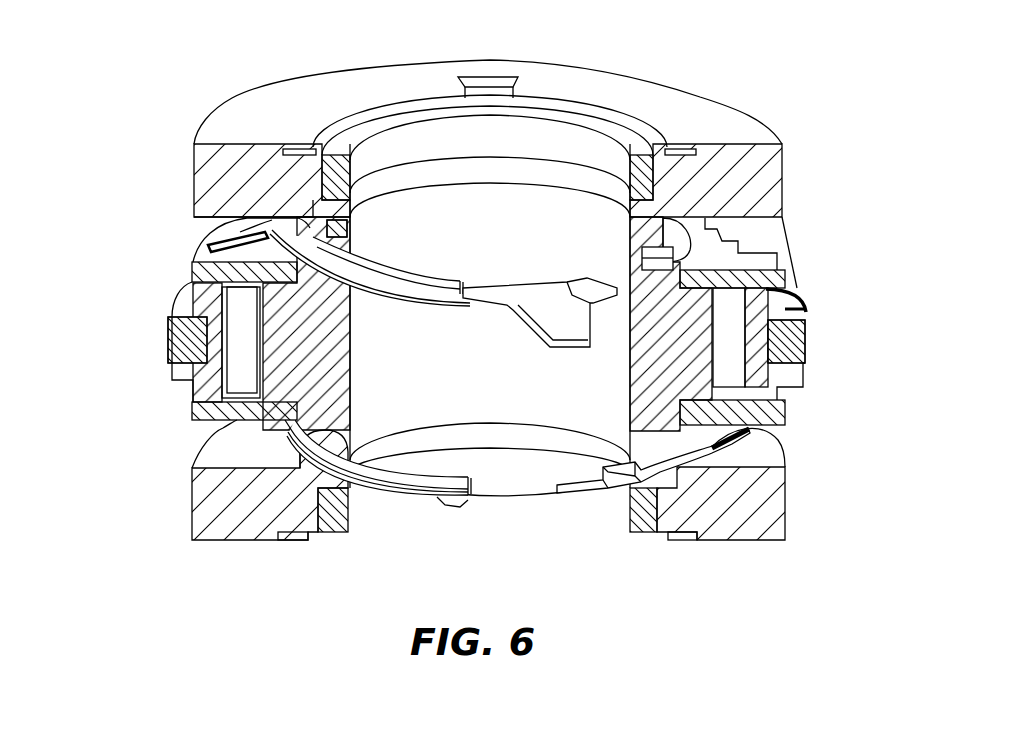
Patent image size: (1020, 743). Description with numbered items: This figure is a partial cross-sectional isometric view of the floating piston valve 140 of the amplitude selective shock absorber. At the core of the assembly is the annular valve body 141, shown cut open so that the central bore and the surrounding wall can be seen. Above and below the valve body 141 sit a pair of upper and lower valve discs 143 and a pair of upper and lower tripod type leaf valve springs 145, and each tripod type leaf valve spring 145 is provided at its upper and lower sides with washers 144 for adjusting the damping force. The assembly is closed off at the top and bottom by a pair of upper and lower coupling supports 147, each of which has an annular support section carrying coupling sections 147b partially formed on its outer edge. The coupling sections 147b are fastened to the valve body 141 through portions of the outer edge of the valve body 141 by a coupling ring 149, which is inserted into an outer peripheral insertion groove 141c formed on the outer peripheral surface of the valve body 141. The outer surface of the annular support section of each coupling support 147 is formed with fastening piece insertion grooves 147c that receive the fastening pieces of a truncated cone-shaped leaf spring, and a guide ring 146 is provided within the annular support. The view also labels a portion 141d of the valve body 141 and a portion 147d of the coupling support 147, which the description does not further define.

The floating piston valve 140 is at (470, 305).
The annular valve body 141 is at (178, 305).
The outer peripheral insertion groove 141c is at (172, 375).
The housing groove 141d is at (225, 387).
The valve disc 143 is at (190, 267).
The washer 144 is at (432, 277).
The tripod type leaf valve spring 145 is at (193, 254).
The guide ring 146 is at (422, 135).
The coupling support 147 is at (184, 165).
The coupling section 147b is at (777, 237).
The fastening piece insertion groove 147c is at (300, 145).
The housing lower portion 147d is at (212, 198).
The coupling ring 149 is at (172, 341).